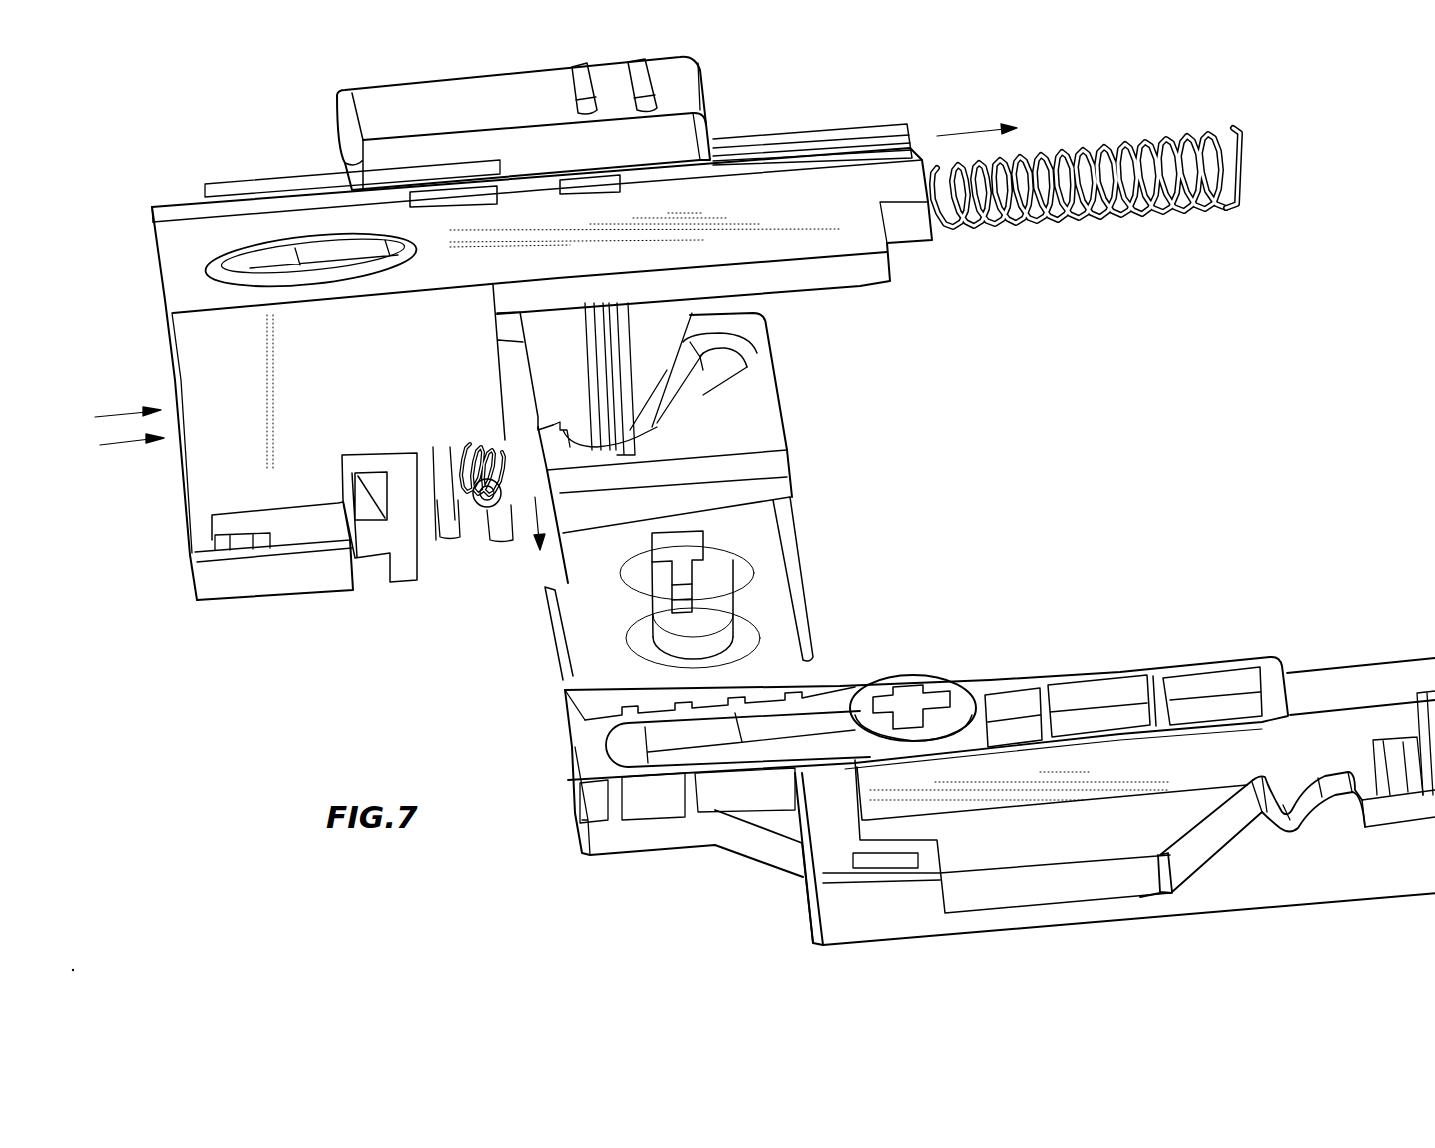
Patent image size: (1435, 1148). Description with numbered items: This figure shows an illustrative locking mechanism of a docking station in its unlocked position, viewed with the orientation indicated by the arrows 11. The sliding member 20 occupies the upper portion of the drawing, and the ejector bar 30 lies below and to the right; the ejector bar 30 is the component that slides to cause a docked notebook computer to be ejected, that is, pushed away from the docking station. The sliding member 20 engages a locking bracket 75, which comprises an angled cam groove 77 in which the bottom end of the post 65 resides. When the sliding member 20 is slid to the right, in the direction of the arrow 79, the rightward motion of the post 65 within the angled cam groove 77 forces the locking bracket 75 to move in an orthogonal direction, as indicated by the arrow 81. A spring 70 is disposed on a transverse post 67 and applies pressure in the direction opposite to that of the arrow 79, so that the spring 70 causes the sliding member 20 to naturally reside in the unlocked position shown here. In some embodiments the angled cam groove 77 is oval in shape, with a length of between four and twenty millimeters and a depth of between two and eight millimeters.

The arrows 11 is at (130, 445).
The sliding member 20 is at (795, 190).
The ejector bar 30 is at (1148, 667).
The post 65 is at (670, 327).
The transverse post 67 is at (1107, 163).
The spring 70 is at (1193, 143).
The locking bracket 75 is at (750, 427).
The angled cam groove 77 is at (720, 363).
The arrow 79 is at (975, 127).
The arrow 81 is at (537, 523).